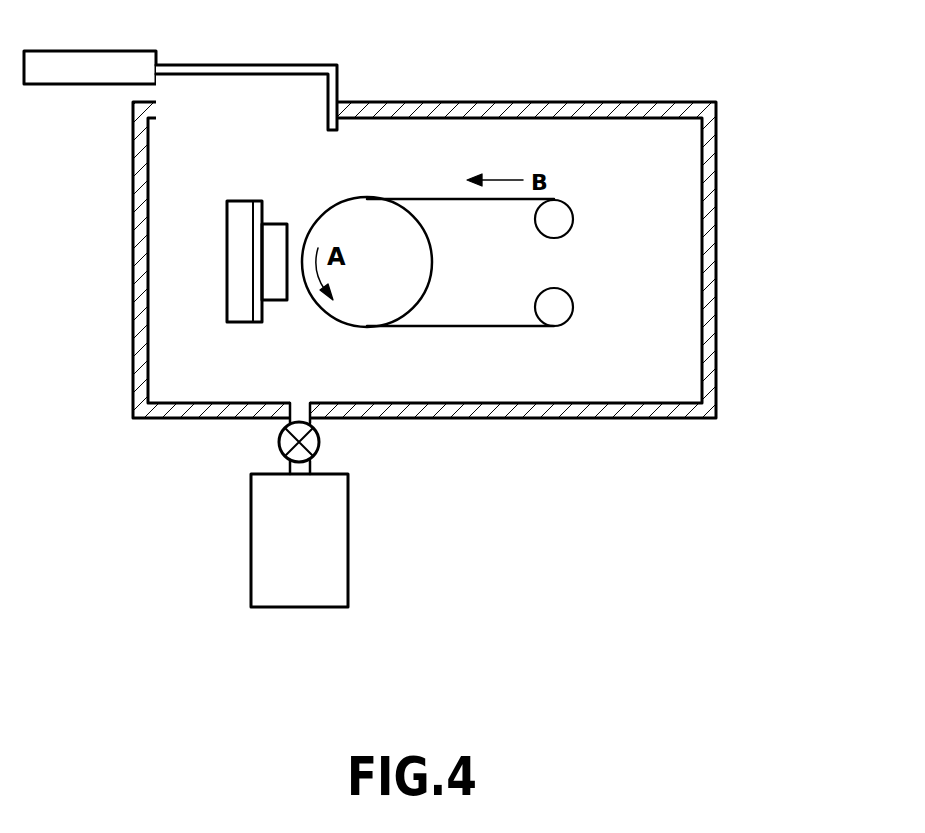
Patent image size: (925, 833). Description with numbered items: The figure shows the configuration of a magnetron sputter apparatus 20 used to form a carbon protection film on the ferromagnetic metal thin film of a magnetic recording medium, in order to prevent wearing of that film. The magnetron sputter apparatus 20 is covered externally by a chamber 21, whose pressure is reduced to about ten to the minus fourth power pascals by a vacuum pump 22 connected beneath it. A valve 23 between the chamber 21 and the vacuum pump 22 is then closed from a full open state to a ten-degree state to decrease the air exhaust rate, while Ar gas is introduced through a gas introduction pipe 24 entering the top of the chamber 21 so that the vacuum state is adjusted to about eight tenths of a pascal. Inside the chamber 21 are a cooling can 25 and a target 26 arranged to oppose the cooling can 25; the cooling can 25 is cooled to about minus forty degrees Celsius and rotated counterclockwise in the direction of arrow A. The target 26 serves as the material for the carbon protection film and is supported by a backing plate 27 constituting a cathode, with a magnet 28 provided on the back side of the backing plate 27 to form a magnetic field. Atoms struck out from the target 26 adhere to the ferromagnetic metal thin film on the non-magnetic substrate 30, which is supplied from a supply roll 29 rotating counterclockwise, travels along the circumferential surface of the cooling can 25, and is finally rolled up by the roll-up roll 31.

The magnetron sputter apparatus 20 is at (744, 93).
The chamber 21 is at (718, 172).
The vacuum pump 22 is at (348, 553).
The valve 23 is at (320, 440).
The gas introduction pipe 24 is at (337, 83).
The cooling can 25 is at (385, 225).
The target 26 is at (283, 224).
The backing plate 27 is at (258, 200).
The magnet 28 is at (227, 237).
The feed roller 29 is at (562, 220).
The non-magnetic substrate 30 is at (453, 198).
The roll-up roll 31 is at (565, 307).